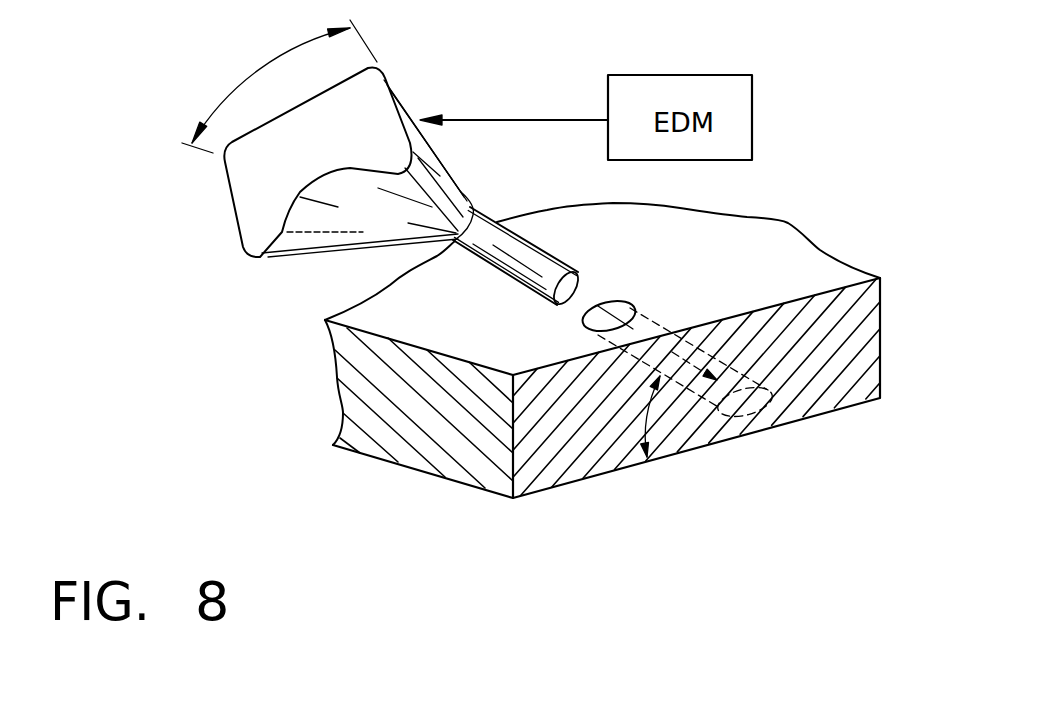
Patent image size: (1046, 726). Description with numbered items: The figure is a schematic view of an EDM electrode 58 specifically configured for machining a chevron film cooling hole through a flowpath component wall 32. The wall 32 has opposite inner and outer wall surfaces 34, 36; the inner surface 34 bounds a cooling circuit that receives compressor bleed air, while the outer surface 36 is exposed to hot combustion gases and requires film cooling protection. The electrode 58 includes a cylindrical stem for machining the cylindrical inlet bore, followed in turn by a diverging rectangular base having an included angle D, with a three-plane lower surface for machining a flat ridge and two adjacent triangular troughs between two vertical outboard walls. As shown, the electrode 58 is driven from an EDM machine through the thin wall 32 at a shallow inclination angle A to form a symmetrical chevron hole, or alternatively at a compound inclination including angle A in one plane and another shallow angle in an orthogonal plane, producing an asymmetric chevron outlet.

The wall 32 is at (790, 223).
The inner wall surface 34 is at (797, 420).
The outer wall surface 36 is at (701, 267).
The EDM electrode 58 is at (330, 158).
The inclination angle A is at (648, 418).
The included angle D is at (247, 80).